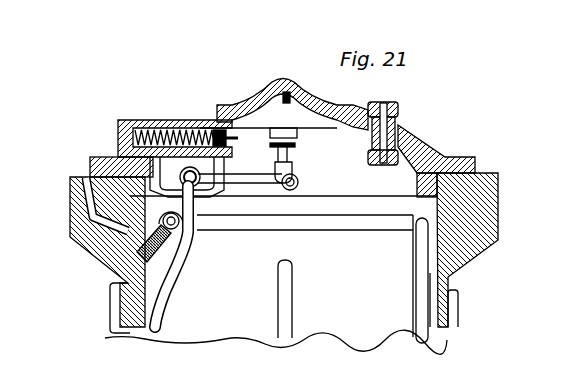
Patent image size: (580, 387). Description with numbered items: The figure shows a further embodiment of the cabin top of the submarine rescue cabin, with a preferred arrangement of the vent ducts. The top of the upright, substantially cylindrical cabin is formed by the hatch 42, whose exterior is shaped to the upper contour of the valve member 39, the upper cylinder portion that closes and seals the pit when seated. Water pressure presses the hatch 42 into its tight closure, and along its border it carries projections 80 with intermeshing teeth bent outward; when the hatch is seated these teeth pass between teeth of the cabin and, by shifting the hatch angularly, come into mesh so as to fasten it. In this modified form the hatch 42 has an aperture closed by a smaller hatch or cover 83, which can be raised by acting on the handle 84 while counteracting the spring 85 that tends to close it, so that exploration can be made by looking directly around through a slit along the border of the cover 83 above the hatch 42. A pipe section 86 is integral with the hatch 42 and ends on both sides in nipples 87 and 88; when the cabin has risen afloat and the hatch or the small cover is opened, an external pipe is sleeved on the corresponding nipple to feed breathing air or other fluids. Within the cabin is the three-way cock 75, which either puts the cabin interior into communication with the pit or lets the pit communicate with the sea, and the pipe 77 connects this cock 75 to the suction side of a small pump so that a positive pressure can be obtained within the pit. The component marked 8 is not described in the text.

The engine cylinder head / body flange 8 is at (106, 158).
The valve member 39 is at (96, 264).
The hatch 42 is at (357, 128).
The three-way cock 75 is at (178, 250).
The pipe 77 is at (420, 281).
The projections 80 is at (418, 191).
The smaller hatch or cover 83 is at (246, 99).
The handle 84 is at (163, 312).
The spring 85 is at (160, 122).
The pipe section 86 is at (388, 133).
The nipple 87 is at (399, 105).
The nipple 88 is at (399, 152).